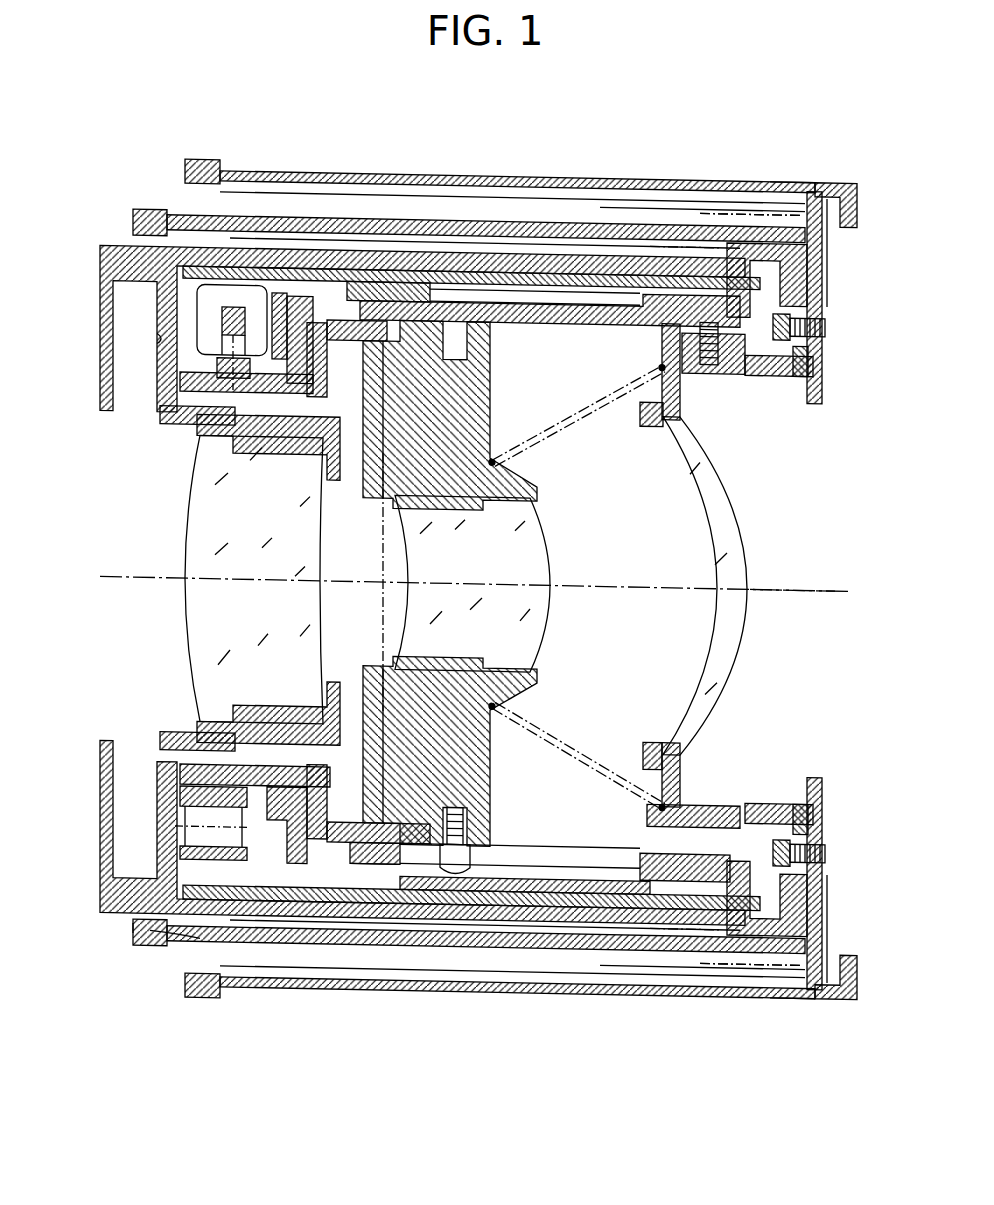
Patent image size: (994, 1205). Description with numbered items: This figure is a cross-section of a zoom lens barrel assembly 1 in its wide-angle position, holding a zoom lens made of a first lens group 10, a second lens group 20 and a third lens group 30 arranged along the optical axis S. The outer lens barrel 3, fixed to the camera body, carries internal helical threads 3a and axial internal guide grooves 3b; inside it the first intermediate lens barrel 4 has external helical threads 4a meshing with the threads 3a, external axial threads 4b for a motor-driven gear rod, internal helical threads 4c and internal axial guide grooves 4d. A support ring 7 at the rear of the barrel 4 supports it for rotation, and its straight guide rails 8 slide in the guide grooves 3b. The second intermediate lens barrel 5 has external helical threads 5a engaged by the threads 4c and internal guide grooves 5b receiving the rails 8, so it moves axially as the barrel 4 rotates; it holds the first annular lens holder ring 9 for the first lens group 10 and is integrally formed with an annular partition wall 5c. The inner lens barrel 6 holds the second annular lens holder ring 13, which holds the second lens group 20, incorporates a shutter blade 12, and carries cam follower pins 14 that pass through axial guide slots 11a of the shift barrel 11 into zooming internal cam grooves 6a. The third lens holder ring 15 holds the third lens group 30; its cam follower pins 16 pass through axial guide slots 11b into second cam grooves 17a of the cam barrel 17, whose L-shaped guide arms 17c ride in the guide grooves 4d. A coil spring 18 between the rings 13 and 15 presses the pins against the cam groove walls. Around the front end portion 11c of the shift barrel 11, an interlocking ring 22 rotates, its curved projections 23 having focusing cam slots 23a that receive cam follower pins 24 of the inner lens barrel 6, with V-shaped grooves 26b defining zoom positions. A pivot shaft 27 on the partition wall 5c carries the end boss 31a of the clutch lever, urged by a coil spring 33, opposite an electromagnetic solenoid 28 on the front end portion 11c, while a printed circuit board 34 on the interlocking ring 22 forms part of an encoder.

The zoom lens barrel assembly 1 is at (370, 162).
The outer lens barrel 3 is at (803, 183).
The internal helical threads 3a is at (627, 210).
The internal guide grooves 3b is at (587, 195).
The first intermediate lens barrel 4 is at (543, 230).
The external helical threads 4a is at (730, 210).
The external axial threads 4b is at (730, 210).
The internal helical threads 4c is at (480, 240).
The internal axial guide grooves 4d is at (822, 253).
The second intermediate lens barrel 5 is at (177, 257).
The external helical threads 5a is at (687, 245).
The internal guide grooves 5b is at (177, 890).
The annular partition wall 5c is at (187, 347).
The inner lens barrel 6 is at (400, 275).
The zooming internal cam grooves 6a is at (567, 323).
The support ring 7 is at (822, 270).
The straight guide rails 8 is at (282, 257).
The first annular lens holder ring 9 is at (330, 422).
The first lens group 10 is at (172, 563).
The shift barrel 11 is at (520, 313).
The axial guide slots 11a is at (570, 845).
The axial guide slots 11b is at (667, 307).
The front end portion 11c is at (280, 780).
The shutter blade 12 is at (380, 594).
The second annular lens holder ring 13 is at (473, 408).
The cam follower pins 14 is at (447, 872).
The third lens holder ring 15 is at (770, 367).
The cam follower pins 16 is at (737, 333).
The cam barrel 17 is at (823, 293).
The second cam grooves 17a is at (690, 320).
The L-shaped guide arms 17c is at (780, 190).
The coil spring 18 is at (580, 760).
The second lens group 20 is at (557, 571).
The interlocking ring 22 is at (300, 300).
The curved projections 23 is at (340, 862).
The focusing cam slot 23a is at (367, 887).
The cam follower pins 24 is at (350, 827).
The V-shaped grooves 26b is at (257, 865).
The pivot shaft 27 is at (197, 730).
The electromagnetic solenoid 28 is at (212, 300).
The third lens group 30 is at (733, 547).
The end boss 31a is at (200, 947).
The coil spring 33 is at (147, 937).
The printed circuit board 34 is at (197, 423).
The optical axis S is at (773, 606).